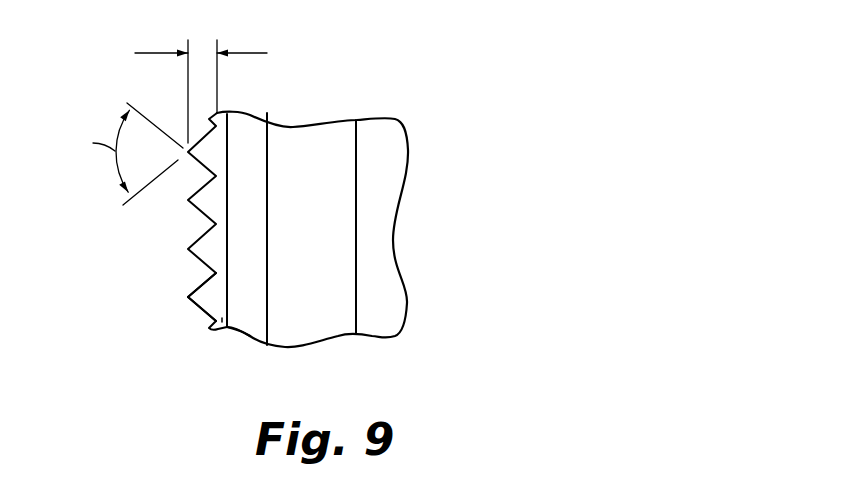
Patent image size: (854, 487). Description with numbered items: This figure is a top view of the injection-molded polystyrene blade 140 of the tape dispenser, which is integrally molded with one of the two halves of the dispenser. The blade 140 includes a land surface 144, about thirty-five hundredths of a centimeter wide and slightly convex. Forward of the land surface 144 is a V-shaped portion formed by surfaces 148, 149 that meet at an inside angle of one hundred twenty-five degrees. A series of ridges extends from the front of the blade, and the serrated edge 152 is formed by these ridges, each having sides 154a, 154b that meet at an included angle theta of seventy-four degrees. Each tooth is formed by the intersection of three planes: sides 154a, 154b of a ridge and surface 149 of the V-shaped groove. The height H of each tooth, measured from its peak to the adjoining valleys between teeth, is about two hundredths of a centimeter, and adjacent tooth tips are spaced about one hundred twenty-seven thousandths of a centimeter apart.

The blade 140 is at (302, 223).
The land surface 144 is at (317, 135).
The surface 148 is at (250, 328).
The surface 149 is at (222, 318).
The serrations 152 is at (188, 200).
The side 154a is at (199, 310).
The side 154b is at (197, 288).